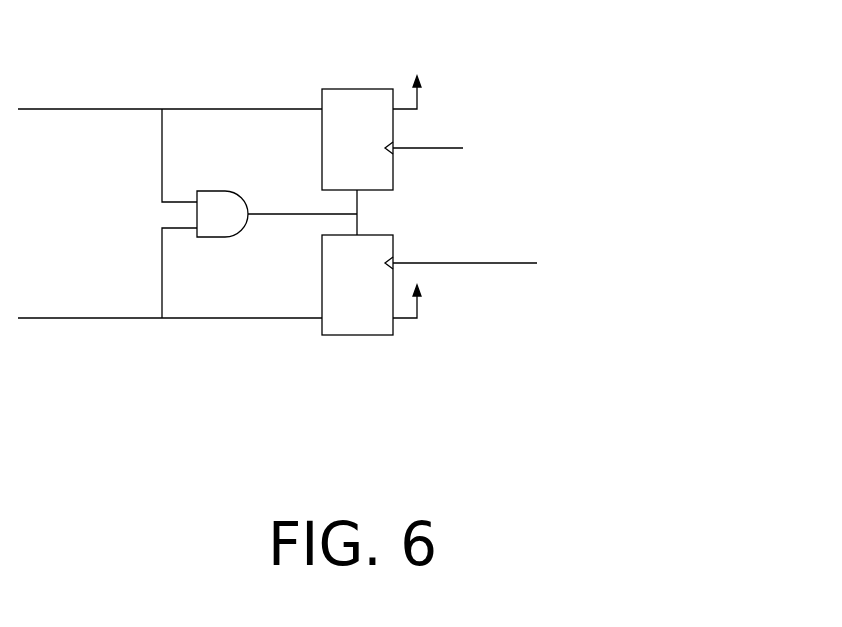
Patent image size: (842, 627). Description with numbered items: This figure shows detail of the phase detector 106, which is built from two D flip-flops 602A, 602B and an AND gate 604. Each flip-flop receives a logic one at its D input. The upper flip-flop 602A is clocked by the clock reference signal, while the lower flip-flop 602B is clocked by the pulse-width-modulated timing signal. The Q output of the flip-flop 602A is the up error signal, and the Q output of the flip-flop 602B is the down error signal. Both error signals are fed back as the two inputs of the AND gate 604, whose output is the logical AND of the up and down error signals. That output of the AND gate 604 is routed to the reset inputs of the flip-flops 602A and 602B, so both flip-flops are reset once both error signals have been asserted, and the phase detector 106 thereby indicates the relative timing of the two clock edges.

The phase detector 106 is at (409, 213).
The D flip-flop 602A is at (357, 89).
The D flip-flop 602B is at (357, 336).
The AND gate 604 is at (213, 191).